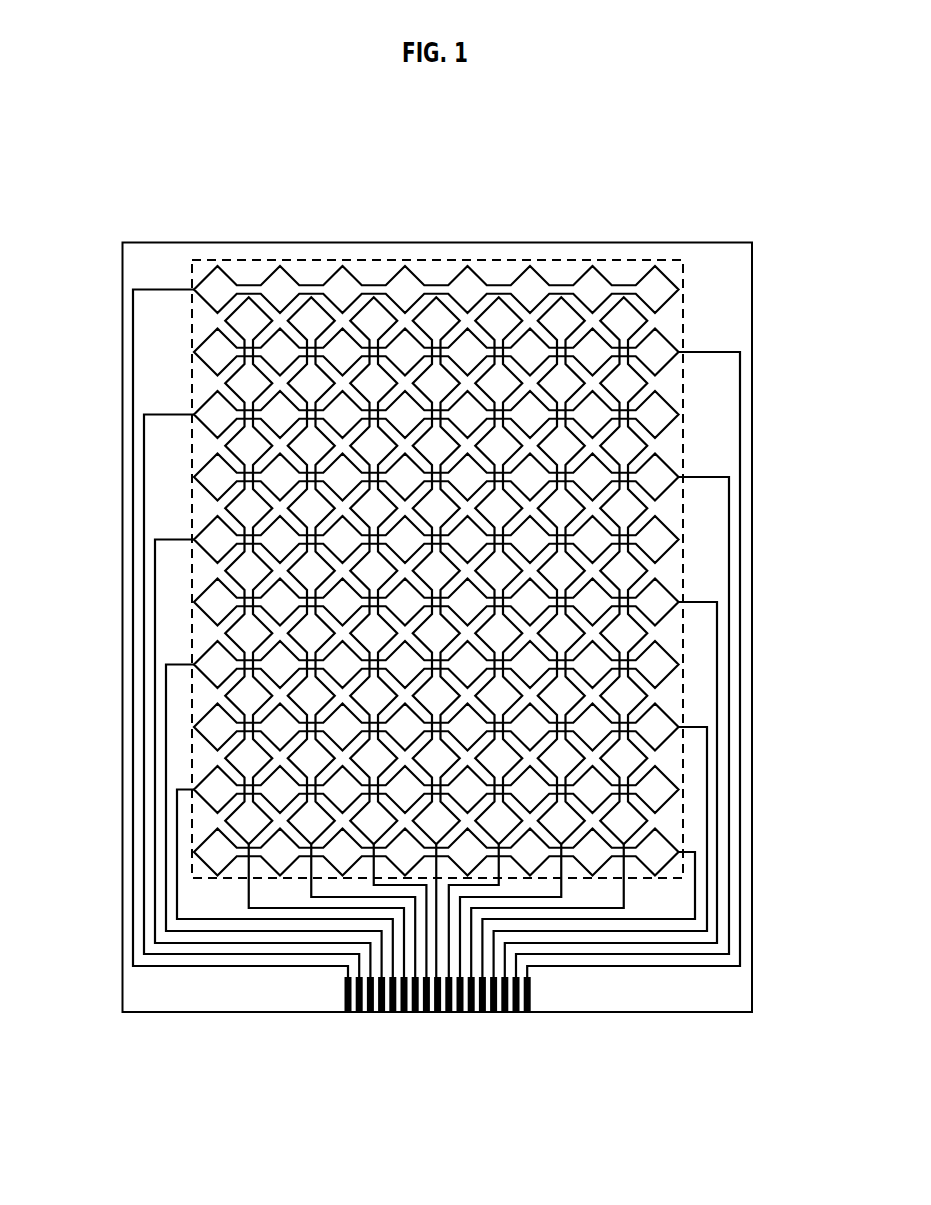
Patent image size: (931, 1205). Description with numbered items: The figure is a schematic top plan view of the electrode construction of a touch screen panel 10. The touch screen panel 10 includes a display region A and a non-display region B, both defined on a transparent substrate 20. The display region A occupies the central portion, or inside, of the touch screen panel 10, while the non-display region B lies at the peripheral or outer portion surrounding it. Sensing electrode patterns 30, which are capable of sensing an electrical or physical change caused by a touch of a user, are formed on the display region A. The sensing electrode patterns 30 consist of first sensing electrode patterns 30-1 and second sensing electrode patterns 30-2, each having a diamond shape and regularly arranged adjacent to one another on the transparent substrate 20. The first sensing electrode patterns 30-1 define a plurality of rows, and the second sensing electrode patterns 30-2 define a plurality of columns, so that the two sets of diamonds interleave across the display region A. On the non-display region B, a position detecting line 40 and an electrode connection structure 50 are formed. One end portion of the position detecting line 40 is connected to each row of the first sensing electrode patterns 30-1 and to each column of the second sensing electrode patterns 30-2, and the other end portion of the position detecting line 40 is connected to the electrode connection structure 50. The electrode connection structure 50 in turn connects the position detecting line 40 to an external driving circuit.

The touch screen panel 10 is at (85, 100).
The transparent substrate 20 is at (217, 243).
The sensing electrode patterns 30 is at (375, 166).
The first sensing electrode patterns 30-1 is at (410, 283).
The second sensing electrode patterns 30-2 is at (500, 320).
The position detecting line 40 is at (133, 710).
The electrode connection structure 50 is at (530, 982).
The display region A is at (292, 260).
The non-display region B is at (718, 260).